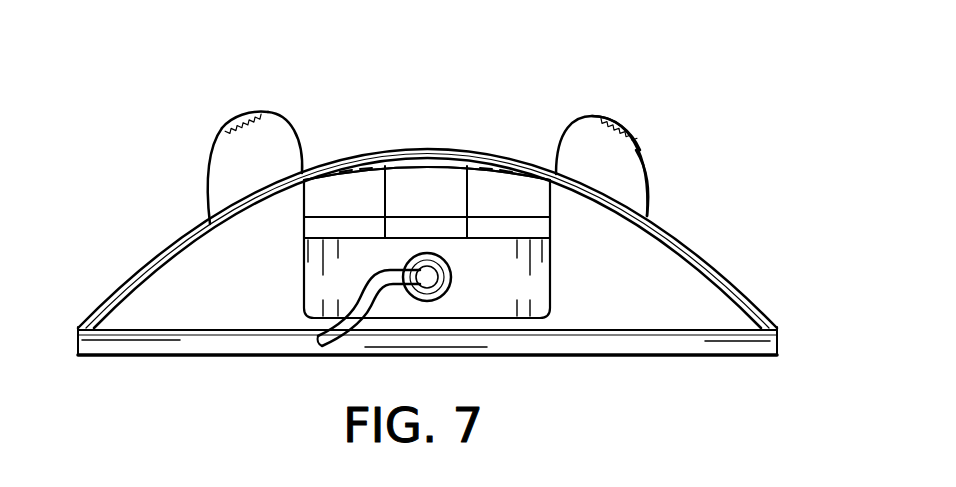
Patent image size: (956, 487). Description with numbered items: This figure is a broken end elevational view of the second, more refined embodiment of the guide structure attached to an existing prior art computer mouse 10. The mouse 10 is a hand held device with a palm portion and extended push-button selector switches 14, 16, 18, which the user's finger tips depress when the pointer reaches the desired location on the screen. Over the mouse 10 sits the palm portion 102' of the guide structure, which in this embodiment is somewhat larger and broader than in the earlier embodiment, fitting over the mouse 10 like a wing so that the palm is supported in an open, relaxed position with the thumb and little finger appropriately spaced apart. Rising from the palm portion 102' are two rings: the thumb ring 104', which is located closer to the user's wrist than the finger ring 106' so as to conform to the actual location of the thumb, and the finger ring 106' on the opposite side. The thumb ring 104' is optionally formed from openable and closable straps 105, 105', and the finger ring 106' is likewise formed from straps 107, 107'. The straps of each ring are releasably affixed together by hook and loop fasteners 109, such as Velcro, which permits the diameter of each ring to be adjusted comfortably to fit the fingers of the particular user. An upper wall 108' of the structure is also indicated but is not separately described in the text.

The computer mouse 10 is at (495, 302).
The push-button selector switch 14 is at (520, 211).
The push-button selector switch 16 is at (445, 211).
The push-button selector switch 18 is at (368, 211).
The palm portion 102' is at (427, 174).
The thumb ring 104' is at (677, 108).
The strap 105 is at (155, 176).
The strap 105' is at (331, 130).
The finger ring 106' is at (205, 111).
The strap 107 is at (552, 159).
The strap 107' is at (706, 196).
The housing top wall 108' is at (427, 120).
The hook and loop fastener 109 is at (234, 121).